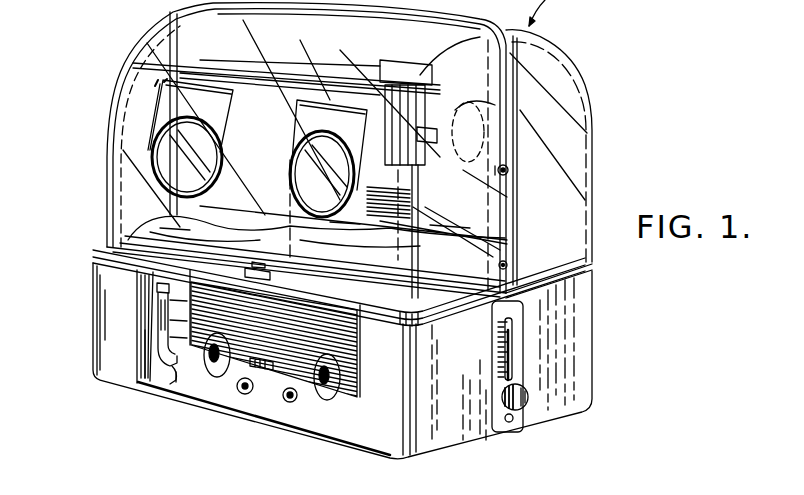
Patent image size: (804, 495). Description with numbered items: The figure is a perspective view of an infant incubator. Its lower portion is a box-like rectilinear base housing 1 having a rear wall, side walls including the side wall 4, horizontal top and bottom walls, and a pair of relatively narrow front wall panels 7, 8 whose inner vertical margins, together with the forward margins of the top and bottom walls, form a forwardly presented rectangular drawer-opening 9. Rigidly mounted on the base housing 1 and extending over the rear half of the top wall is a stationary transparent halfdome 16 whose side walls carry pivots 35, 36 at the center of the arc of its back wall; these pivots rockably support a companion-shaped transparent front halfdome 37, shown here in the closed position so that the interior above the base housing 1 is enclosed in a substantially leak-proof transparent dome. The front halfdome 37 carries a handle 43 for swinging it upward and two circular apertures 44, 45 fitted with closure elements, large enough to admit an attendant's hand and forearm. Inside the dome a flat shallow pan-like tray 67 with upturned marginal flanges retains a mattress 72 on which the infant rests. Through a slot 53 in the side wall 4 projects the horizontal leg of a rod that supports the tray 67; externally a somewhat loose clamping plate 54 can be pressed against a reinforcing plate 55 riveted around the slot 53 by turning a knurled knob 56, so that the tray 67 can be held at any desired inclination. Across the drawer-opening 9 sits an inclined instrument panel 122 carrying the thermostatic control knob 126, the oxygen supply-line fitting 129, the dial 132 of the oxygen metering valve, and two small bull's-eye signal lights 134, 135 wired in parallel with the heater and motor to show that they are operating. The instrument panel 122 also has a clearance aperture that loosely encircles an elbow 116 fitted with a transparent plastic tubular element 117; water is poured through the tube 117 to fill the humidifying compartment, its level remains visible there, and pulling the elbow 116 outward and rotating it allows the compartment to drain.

The base housing 1 is at (596, 341).
The side wall 4 is at (455, 443).
The front wall panel 7 is at (117, 377).
The front wall panel 8 is at (383, 443).
The drawer-opening 9 is at (150, 303).
The stationary halfdome 16 is at (580, 78).
The pivot 35 is at (175, 110).
The pivot 36 is at (510, 172).
The front halfdome 37 is at (126, 44).
The handle 43 is at (258, 270).
The circular aperture 44 is at (162, 130).
The circular aperture 45 is at (300, 162).
The slot 53 is at (512, 336).
The clamping plate 54 is at (507, 438).
The reinforcing plate 55 is at (522, 306).
The knurled knob 56 is at (522, 404).
The tray 67 is at (135, 248).
The mattress 72 is at (234, 222).
The elbow 116 is at (153, 370).
The plastic tubular element 117 is at (153, 305).
The instrument panel 122 is at (173, 380).
The control knob 126 is at (333, 398).
The supply-line fitting 129 is at (263, 372).
The dial 132 is at (213, 370).
The bull's-eye signal light 134 is at (240, 394).
The bull's-eye signal light 135 is at (296, 403).